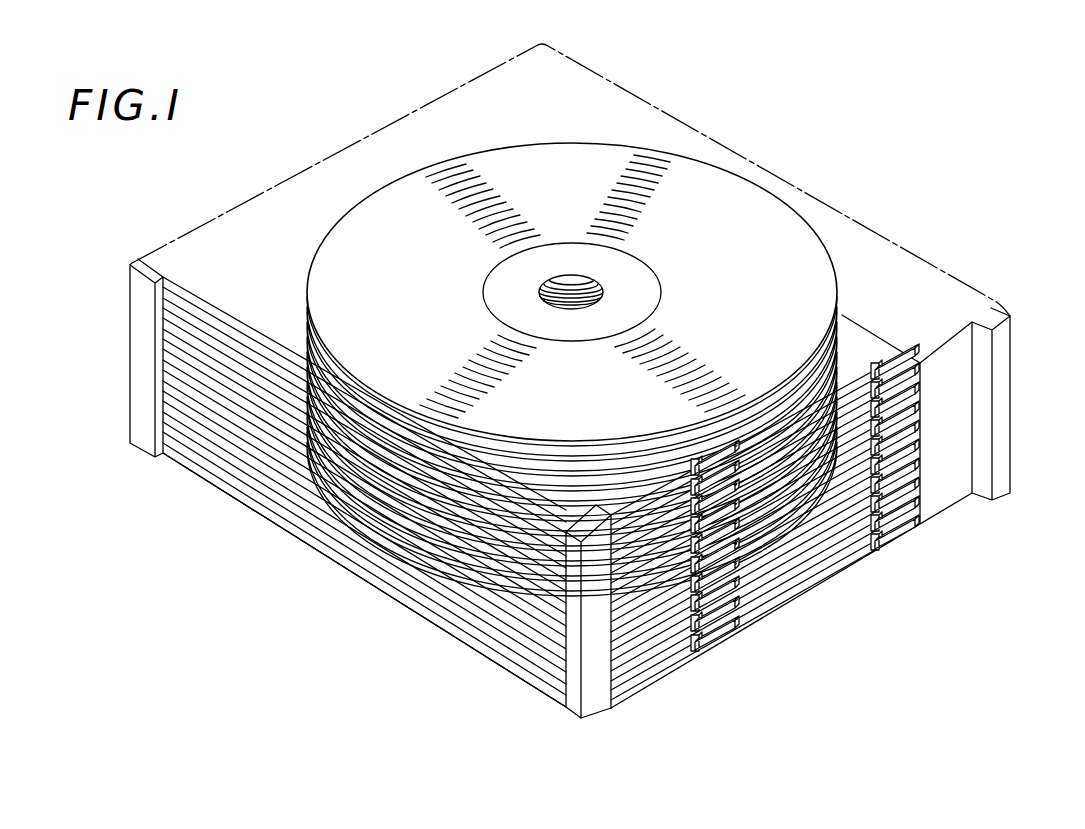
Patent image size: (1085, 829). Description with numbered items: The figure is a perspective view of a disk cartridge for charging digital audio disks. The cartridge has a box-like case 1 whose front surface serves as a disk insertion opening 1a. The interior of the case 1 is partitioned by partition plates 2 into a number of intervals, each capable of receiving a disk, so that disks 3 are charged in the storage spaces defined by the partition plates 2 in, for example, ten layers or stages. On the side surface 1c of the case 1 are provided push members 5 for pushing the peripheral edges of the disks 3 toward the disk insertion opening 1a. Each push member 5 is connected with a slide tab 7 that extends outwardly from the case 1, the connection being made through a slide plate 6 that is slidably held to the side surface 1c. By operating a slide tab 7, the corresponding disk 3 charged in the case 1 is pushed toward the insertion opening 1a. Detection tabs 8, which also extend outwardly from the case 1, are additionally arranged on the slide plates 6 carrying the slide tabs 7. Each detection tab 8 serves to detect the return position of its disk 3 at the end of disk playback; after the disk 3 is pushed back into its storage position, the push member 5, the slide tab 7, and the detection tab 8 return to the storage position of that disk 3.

The case 1 is at (677, 121).
The disk insertion opening 1a is at (322, 560).
The side surface 1c is at (953, 404).
The partition plates 2 is at (251, 485).
The disks 3 is at (362, 223).
The push member 5 is at (867, 345).
The slide plate 6 is at (803, 557).
The slide tab 7 is at (737, 603).
The detection tab 8 is at (900, 486).